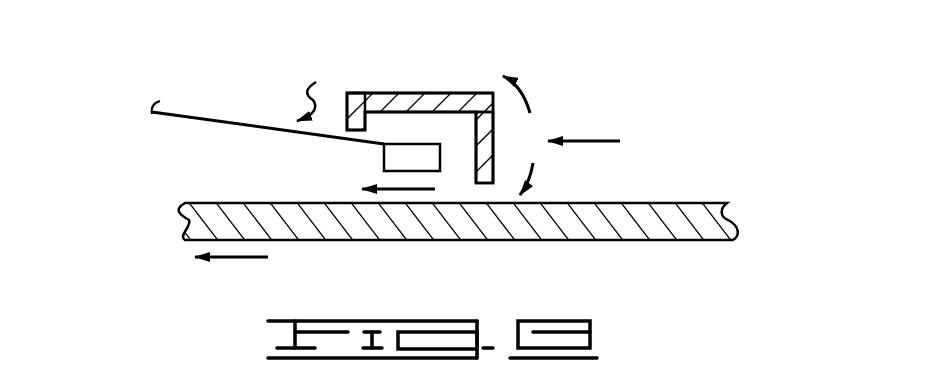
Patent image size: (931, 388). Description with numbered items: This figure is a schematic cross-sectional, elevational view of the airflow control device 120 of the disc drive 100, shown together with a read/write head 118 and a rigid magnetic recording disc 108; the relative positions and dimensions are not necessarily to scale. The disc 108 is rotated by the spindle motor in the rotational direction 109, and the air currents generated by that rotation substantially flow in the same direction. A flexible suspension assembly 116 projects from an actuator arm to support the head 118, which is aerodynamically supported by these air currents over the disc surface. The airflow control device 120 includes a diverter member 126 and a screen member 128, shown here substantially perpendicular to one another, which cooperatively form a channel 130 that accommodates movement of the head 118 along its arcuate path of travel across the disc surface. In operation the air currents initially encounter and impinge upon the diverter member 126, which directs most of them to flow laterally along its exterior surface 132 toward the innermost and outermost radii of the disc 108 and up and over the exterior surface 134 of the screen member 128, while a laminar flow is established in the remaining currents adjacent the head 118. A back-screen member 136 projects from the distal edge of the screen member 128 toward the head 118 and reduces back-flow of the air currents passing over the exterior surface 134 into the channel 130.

The disc drive 100 is at (160, 66).
The rigid magnetic recording disc 108 is at (680, 213).
The rotational direction 109 is at (230, 258).
The flexible suspension assembly 116 is at (238, 122).
The read/write head 118 is at (384, 157).
The airflow control device 120 is at (565, 74).
The diverter member 126 is at (500, 152).
The screen member 128 is at (415, 84).
The channel 130 is at (463, 128).
The exterior surface of the diverter member 132 is at (493, 132).
The exterior surface of the screen member 134 is at (378, 93).
The back-screen member 136 is at (353, 98).